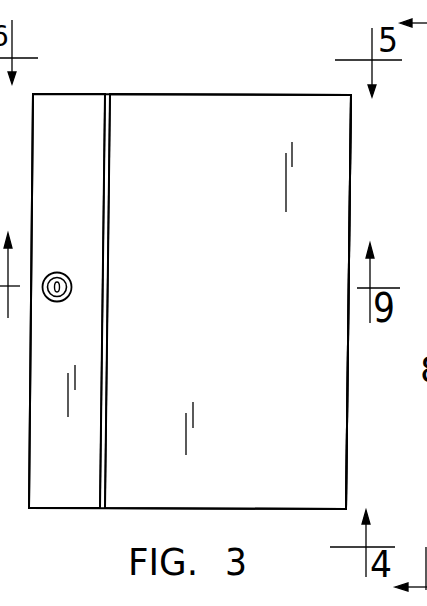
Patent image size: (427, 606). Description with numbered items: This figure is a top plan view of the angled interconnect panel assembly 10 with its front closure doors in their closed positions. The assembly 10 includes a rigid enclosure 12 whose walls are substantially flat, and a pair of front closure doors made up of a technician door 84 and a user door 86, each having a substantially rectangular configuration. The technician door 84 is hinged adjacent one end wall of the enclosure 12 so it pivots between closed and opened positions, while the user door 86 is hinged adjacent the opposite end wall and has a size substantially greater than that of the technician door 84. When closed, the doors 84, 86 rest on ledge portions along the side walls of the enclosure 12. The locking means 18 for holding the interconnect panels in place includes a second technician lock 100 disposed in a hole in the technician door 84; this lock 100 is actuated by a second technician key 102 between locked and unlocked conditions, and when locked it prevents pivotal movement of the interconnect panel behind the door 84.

The angled interconnect panel assembly 10 is at (217, 78).
The enclosure 12 is at (356, 187).
The locking means 18 is at (74, 263).
The technician door 84 is at (83, 199).
The user door 86 is at (271, 381).
The second technician lock 100 is at (66, 297).
The second technician key 102 is at (71, 284).